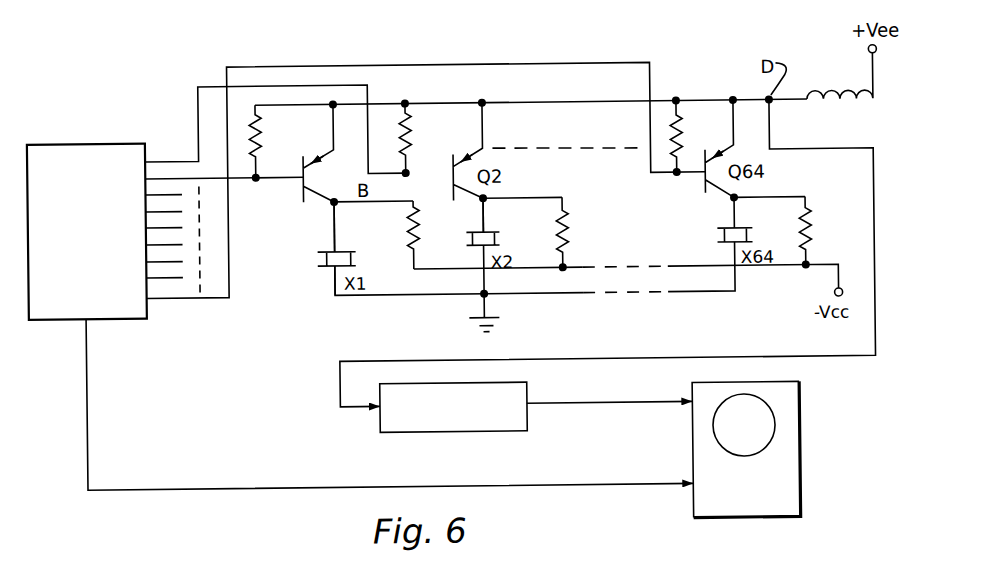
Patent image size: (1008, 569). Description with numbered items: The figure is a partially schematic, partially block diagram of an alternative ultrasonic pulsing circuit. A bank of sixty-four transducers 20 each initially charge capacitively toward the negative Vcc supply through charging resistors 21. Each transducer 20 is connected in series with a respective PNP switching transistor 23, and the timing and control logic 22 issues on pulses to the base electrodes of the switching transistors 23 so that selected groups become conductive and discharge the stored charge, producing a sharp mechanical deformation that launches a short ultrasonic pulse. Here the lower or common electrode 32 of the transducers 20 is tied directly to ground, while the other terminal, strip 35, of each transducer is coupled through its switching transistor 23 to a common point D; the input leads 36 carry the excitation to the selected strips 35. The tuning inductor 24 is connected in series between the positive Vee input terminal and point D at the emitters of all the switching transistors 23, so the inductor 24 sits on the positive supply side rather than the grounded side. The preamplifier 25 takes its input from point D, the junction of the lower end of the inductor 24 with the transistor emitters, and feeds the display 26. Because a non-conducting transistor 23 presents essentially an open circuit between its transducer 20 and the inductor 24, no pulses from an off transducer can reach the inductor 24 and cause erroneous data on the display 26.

The transducers 20 is at (321, 256).
The charging resistors 21 is at (406, 237).
The timing and control logic 22 is at (96, 138).
The switching transistor 23 is at (304, 188).
The tuning inductor 24 is at (841, 106).
The preamplifier 25 is at (477, 432).
The display 26 is at (800, 465).
The common conductive electrode 32 is at (333, 276).
The individual conductive strips 35 is at (344, 248).
The input leads 36 is at (488, 222).